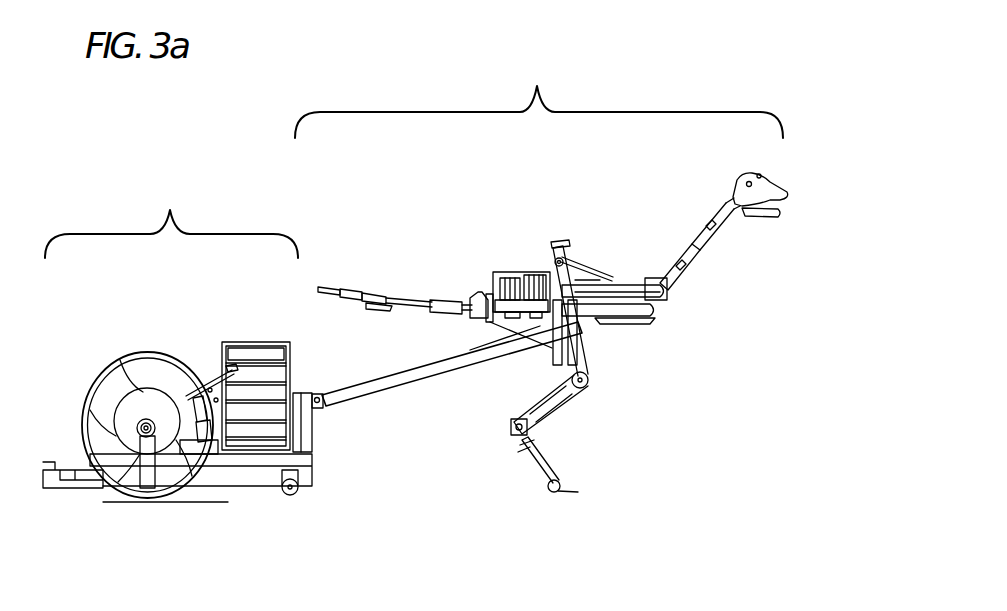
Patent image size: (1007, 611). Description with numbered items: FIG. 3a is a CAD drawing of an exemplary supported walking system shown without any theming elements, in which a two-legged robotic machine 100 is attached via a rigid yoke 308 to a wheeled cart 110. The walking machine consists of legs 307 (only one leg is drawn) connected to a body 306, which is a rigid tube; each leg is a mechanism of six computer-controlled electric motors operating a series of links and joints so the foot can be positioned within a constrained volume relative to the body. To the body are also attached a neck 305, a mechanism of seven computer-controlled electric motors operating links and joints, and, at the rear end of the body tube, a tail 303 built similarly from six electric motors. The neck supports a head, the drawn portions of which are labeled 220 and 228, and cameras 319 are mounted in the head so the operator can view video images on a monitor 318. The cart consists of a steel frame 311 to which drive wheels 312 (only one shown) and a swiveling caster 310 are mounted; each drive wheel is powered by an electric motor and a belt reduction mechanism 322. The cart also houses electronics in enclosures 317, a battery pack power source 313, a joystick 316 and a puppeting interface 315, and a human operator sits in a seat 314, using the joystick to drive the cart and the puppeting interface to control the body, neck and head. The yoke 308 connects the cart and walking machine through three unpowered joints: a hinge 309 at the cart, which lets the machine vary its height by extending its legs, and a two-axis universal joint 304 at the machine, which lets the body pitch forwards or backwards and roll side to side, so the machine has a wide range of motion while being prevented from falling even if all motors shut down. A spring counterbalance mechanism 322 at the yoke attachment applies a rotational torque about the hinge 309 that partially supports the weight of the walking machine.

The two-legged robotic machine 100 is at (541, 275).
The wheeled cart 110 is at (203, 370).
The head 220 is at (735, 208).
The lower jaw 228 is at (762, 217).
The tail 303 is at (450, 296).
The universal joint 304 is at (548, 262).
The neck 305 is at (664, 264).
The body 306 is at (640, 320).
The legs 307 is at (587, 395).
The yoke 308 is at (440, 380).
The hinge 309 is at (324, 404).
The swiveling caster 310 is at (298, 494).
The steel frame 311 is at (247, 468).
The drive wheels 312 is at (175, 497).
The battery pack power source 313 is at (98, 490).
The seat 314 is at (142, 384).
The puppeting interface 315 is at (198, 378).
The joystick 316 is at (201, 412).
The enclosures 317 is at (250, 342).
The monitor 318 is at (270, 356).
The cameras 319 is at (760, 172).
The belt reduction mechanism 322 is at (108, 404).